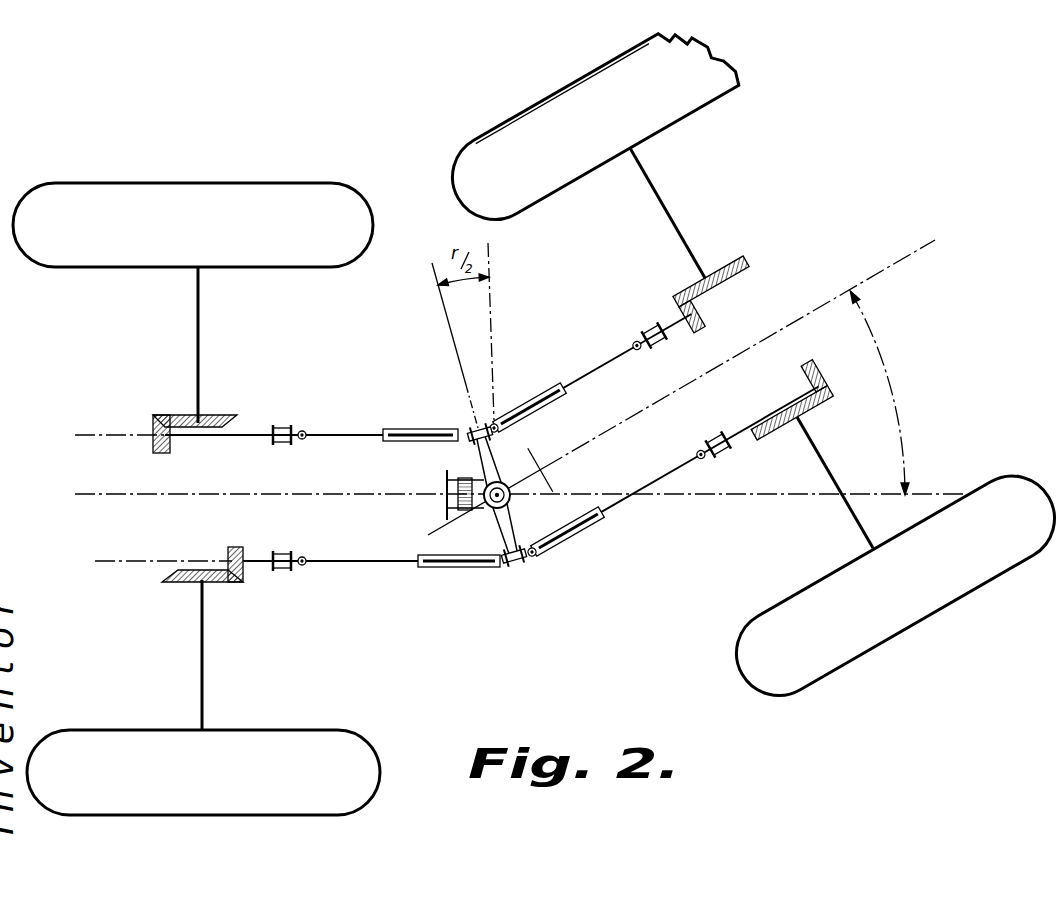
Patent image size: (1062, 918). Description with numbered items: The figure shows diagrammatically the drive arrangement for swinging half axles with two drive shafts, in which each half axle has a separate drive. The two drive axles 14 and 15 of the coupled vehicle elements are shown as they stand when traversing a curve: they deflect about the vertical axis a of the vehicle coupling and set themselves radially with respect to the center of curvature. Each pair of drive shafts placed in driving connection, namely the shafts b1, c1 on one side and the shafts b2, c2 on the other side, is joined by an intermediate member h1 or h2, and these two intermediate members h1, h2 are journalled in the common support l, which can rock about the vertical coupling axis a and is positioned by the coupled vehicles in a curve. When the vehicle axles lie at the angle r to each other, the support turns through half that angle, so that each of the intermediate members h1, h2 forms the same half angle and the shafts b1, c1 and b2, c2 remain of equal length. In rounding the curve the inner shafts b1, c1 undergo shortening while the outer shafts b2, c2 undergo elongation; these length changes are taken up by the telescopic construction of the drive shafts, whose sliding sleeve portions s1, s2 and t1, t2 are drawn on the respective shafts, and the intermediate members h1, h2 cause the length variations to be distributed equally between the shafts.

The drive axle 14 is at (198, 343).
The drive axle 15 is at (678, 232).
The vertical coupling axis a is at (489, 509).
The common support l is at (515, 512).
The drive shaft b1 is at (337, 434).
The drive shaft b2 is at (337, 566).
The front steering rod s1 is at (206, 443).
The rear steering rod coupling s2 is at (650, 347).
The front tie rod t1 is at (240, 571).
The rear tie rod t2 is at (605, 511).
The drive shaft c1 is at (597, 365).
The drive shaft c2 is at (686, 457).
The intermediate member h1 is at (479, 426).
The intermediate member h2 is at (517, 570).
The angle between vehicle axles r is at (885, 393).